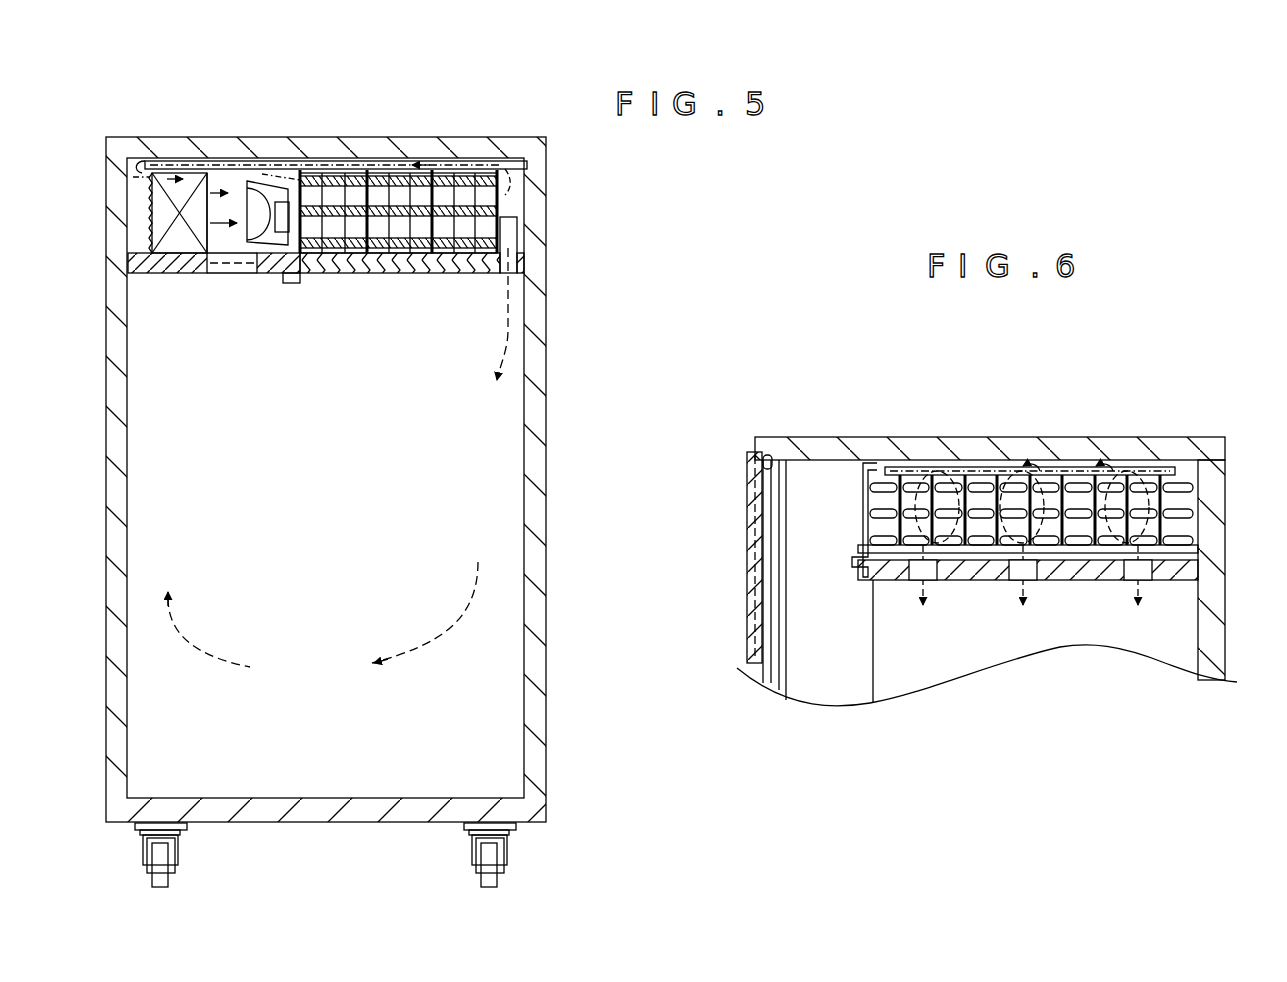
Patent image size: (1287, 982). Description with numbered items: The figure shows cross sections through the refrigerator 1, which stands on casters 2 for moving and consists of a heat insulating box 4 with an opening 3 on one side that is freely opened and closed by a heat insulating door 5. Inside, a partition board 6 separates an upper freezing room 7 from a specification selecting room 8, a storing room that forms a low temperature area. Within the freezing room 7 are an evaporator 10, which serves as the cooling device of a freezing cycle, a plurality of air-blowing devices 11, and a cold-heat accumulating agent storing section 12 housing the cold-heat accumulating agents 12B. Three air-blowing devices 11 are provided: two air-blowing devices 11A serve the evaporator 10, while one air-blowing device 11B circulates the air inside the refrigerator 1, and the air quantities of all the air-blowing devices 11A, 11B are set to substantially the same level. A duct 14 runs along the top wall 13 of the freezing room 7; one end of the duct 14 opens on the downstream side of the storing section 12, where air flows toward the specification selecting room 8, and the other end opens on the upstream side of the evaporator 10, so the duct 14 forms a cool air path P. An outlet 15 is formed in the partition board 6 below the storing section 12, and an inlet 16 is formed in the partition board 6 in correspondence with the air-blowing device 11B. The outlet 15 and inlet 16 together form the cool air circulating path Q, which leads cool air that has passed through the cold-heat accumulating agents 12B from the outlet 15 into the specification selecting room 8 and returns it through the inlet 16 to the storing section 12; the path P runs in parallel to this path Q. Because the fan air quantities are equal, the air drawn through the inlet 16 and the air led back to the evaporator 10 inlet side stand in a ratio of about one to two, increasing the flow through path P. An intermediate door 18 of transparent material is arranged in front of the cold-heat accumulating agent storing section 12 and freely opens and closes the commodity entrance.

In FIG. 5, the refrigerator 1 is at (555, 583).
In FIG. 5, the casters 2 is at (172, 882).
In FIG. 6, the opening 3 is at (784, 460).
In FIG. 5, the heat insulating box 4 is at (542, 298).
In FIG. 6, the heat insulating box 4 is at (1218, 539).
In FIG. 6, the heat insulating door 5 is at (747, 505).
In FIG. 5, the partition board 6 is at (165, 273).
In FIG. 6, the partition board 6 is at (1183, 580).
In FIG. 5, the freezing room 7 is at (226, 185).
In FIG. 5, the specification selecting room 8 is at (369, 709).
In FIG. 5, the evaporator 10 is at (150, 234).
In FIG. 5, the air-blowing devices 11 is at (253, 180).
In FIG. 6, the air-blowing devices for the evaporator 11A is at (915, 465).
In FIG. 6, the air-blowing device for circulating the air inside the refrigerator 11B is at (1052, 483).
In FIG. 5, the cold-heat accumulating agent storing section 12 is at (398, 207).
In FIG. 6, the cold-heat accumulating agent storing section 12 is at (1180, 500).
In FIG. 5, the cold-heat accumulating agents 12B is at (338, 178).
In FIG. 6, the cold-heat accumulating agents 12B is at (948, 553).
In FIG. 5, the top wall 13 is at (287, 150).
In FIG. 6, the top wall 13 is at (1000, 448).
In FIG. 5, the duct 14 is at (528, 165).
In FIG. 6, the duct 14 is at (962, 463).
In FIG. 5, the outlet 15 is at (507, 277).
In FIG. 6, the outlet 15 is at (938, 583).
In FIG. 5, the inlet 16 is at (252, 273).
In FIG. 6, the intermediate door 18 is at (864, 485).
In FIG. 5, the cool air path P is at (535, 196).
In FIG. 5, the cool air circulating path Q is at (507, 333).